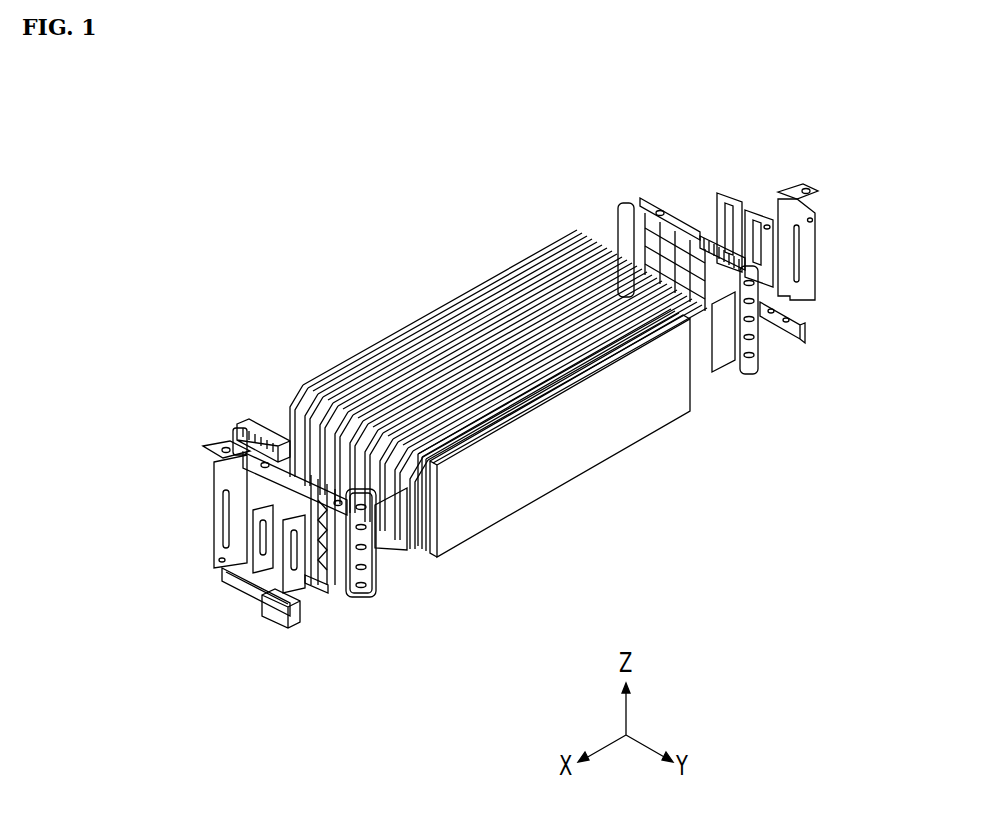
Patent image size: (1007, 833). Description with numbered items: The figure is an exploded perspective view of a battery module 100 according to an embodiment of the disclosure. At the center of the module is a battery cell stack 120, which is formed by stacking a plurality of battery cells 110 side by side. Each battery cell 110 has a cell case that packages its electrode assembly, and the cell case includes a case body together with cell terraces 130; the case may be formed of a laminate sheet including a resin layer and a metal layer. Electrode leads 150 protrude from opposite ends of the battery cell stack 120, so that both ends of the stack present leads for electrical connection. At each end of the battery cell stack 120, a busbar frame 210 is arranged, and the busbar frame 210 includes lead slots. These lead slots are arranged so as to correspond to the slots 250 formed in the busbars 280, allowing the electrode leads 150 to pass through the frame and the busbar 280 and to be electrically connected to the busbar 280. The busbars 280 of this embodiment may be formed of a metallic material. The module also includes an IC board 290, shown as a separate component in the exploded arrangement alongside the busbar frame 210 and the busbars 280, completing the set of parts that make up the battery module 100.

The battery module 100 is at (365, 214).
The battery cell 110 is at (580, 455).
The battery cell stack 120 is at (471, 323).
The cell terrace 130 is at (423, 522).
The electrode lead 150 is at (398, 548).
The busbar frame 210 is at (639, 200).
The slot 250 is at (272, 535).
The busbar 280 is at (732, 191).
The IC board 290 is at (223, 593).